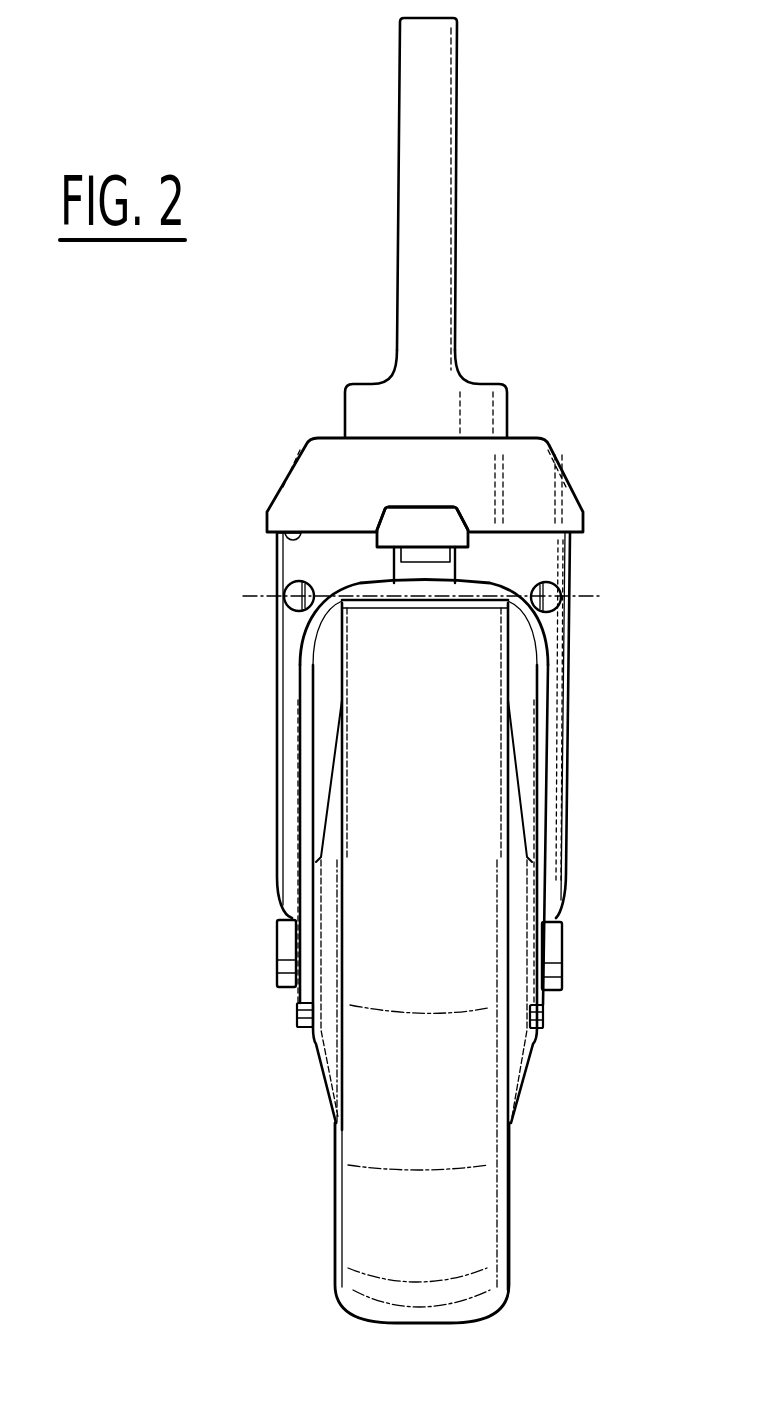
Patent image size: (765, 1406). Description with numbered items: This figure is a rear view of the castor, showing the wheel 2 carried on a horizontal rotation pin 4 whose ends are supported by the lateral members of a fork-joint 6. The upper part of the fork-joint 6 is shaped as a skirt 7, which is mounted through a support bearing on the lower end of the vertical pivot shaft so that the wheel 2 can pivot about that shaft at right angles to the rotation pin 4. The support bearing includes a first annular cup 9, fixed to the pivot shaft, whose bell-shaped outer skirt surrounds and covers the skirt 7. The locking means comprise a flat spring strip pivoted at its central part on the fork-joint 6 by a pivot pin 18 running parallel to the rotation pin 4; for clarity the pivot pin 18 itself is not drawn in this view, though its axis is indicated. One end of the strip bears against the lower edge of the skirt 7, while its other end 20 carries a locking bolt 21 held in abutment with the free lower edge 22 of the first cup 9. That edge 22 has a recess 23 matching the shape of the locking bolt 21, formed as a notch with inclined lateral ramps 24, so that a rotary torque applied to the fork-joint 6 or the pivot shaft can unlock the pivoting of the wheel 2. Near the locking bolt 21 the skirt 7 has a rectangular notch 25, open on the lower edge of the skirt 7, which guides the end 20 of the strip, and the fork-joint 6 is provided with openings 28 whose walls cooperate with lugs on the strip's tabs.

The wheel 2 is at (355, 1192).
The rotation pin 4 is at (553, 940).
The fork-joint 6 is at (288, 705).
The skirt 7 is at (512, 558).
The first annular cup 9 is at (573, 497).
The pivot pin 18 is at (595, 596).
The other end of the spring strip 20 is at (407, 557).
The locking bolt 21 is at (410, 522).
The free lower edge 22 is at (277, 542).
The recess 23 is at (445, 505).
The inclined lateral ramps 24 is at (377, 516).
The notch 25 is at (438, 572).
The openings 28 is at (283, 595).